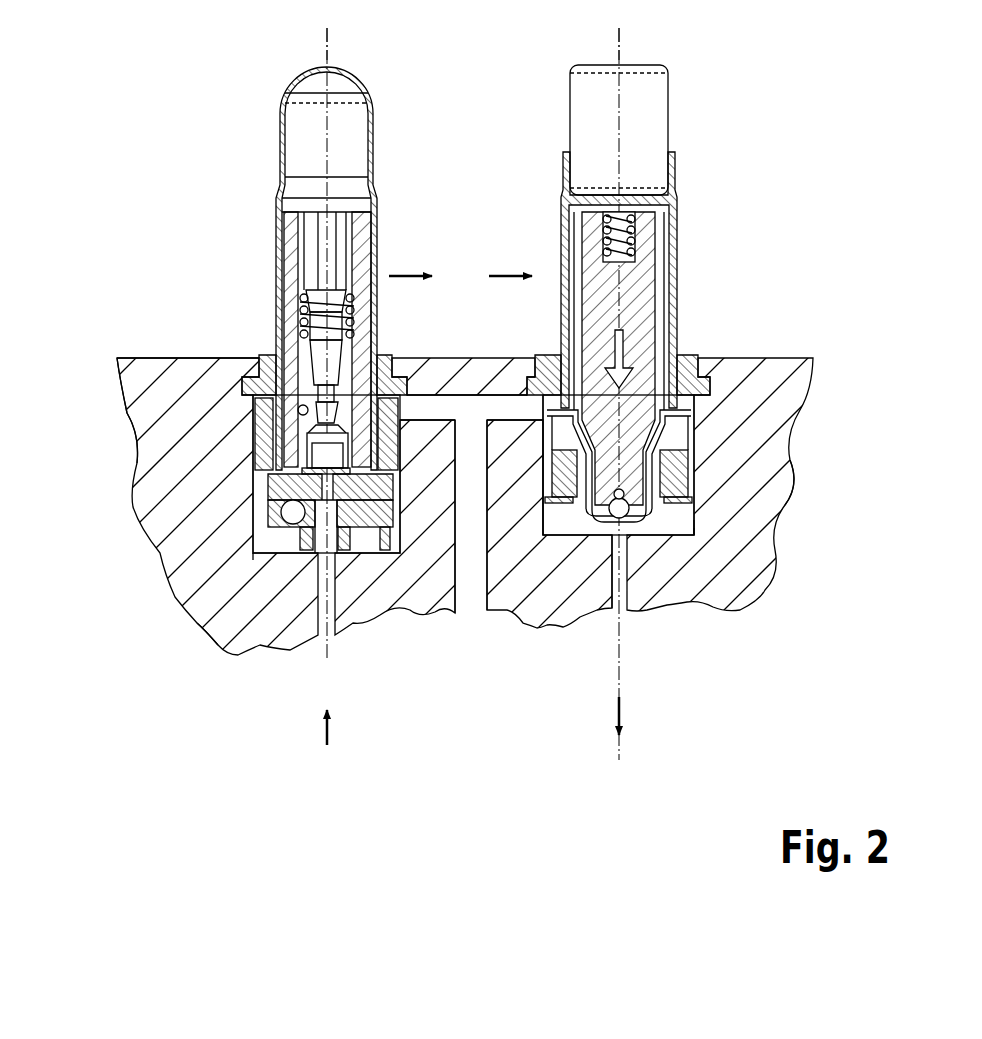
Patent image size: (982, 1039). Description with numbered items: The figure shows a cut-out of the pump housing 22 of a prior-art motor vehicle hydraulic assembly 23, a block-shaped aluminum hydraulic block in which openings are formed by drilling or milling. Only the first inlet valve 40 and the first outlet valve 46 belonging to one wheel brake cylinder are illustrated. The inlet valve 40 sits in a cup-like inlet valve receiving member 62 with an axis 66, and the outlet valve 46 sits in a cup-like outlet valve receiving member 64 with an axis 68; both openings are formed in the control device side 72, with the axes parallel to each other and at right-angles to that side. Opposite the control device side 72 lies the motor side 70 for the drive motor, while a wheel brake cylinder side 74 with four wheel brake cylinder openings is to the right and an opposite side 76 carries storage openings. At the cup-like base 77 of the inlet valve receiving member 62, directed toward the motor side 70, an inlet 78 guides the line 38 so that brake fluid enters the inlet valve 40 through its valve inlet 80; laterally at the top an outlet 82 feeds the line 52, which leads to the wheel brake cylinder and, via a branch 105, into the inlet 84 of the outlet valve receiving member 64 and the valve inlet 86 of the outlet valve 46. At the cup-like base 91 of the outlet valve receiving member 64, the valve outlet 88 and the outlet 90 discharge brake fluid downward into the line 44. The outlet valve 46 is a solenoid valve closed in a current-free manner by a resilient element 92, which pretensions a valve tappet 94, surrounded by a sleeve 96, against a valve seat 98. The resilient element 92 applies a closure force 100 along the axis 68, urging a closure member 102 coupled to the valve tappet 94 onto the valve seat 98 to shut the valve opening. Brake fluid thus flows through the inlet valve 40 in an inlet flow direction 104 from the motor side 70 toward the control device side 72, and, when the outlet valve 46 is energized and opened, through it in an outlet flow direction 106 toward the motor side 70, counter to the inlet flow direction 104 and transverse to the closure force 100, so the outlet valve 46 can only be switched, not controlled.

The pump housing 22 is at (140, 362).
The hydraulic assembly 23 is at (160, 138).
The line 38 is at (301, 369).
The first inlet valve 40 is at (298, 122).
The line 44 is at (682, 394).
The first outlet valve 46 is at (583, 122).
The line 52 is at (470, 587).
The inlet valve receiving member 62 is at (253, 556).
The outlet valve receiving member 64 is at (694, 516).
The axis 66 is at (322, 38).
The axis 68 is at (628, 35).
The motor side 70 is at (215, 752).
The control device side 72 is at (192, 356).
The wheel brake cylinder side 74 is at (120, 496).
The side 76 is at (810, 527).
The cup-like base 77 is at (396, 556).
The inlet 78 is at (268, 556).
The valve inlet 80 is at (296, 542).
The outlet 82 is at (404, 380).
The inlet 84 is at (513, 378).
The valve inlet 86 is at (548, 400).
The valve outlet 88 is at (600, 545).
The outlet 90 is at (614, 545).
The cup-like base 91 is at (745, 595).
The resilient element 92 is at (642, 240).
The valve tappet 94 is at (660, 255).
The sleeve 96 is at (673, 292).
The valve seat 98 is at (655, 536).
The closure force 100 is at (625, 345).
The closure member 102 is at (627, 500).
The inlet flow direction 104 is at (415, 276).
The branch 105 is at (470, 425).
The outlet flow direction 106 is at (505, 276).